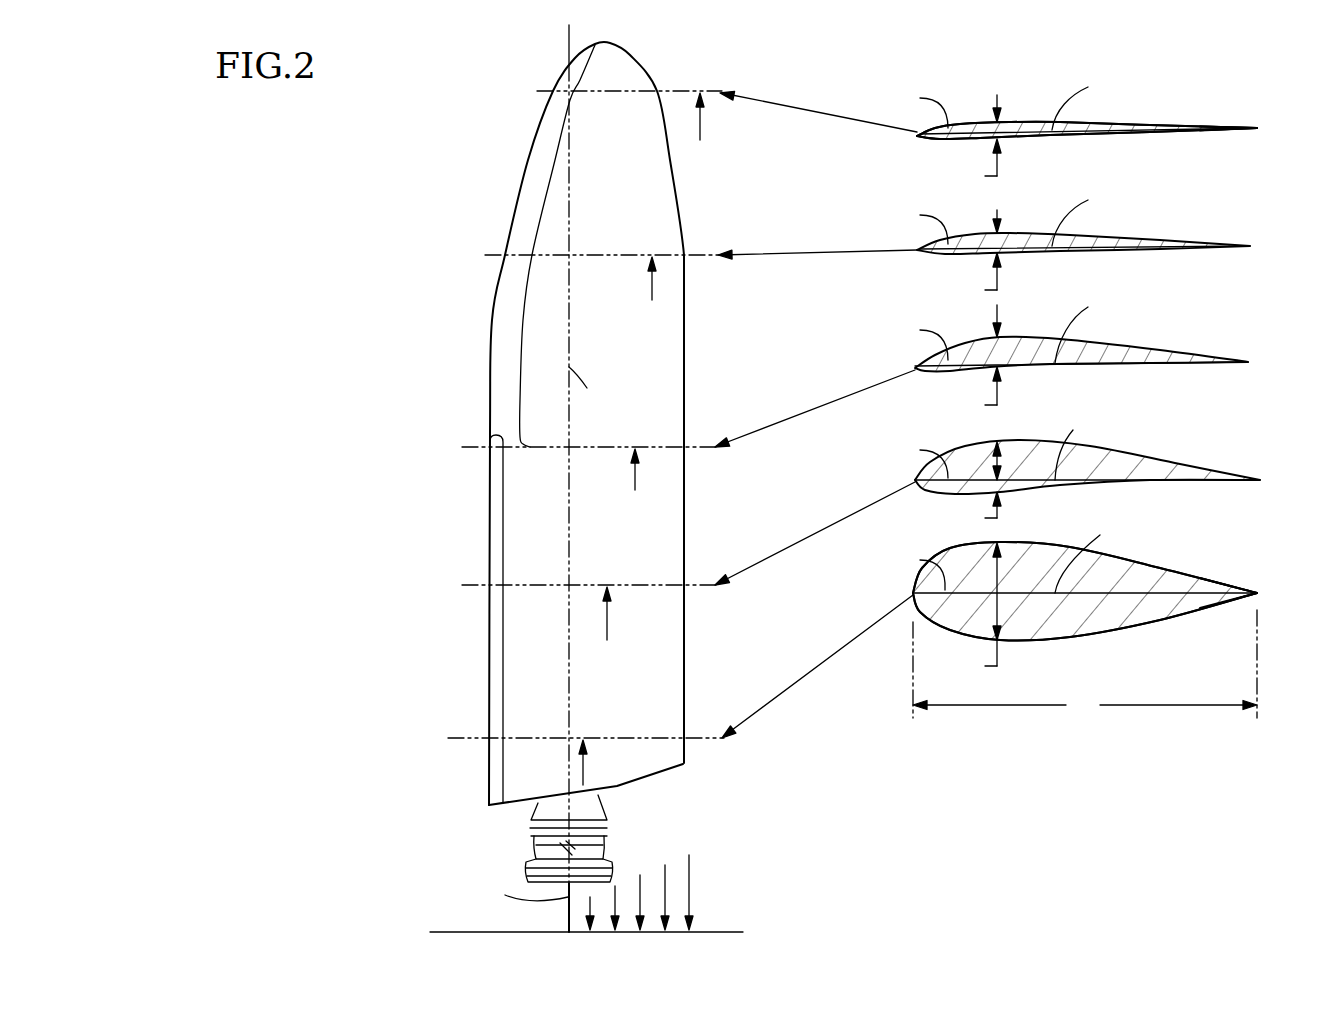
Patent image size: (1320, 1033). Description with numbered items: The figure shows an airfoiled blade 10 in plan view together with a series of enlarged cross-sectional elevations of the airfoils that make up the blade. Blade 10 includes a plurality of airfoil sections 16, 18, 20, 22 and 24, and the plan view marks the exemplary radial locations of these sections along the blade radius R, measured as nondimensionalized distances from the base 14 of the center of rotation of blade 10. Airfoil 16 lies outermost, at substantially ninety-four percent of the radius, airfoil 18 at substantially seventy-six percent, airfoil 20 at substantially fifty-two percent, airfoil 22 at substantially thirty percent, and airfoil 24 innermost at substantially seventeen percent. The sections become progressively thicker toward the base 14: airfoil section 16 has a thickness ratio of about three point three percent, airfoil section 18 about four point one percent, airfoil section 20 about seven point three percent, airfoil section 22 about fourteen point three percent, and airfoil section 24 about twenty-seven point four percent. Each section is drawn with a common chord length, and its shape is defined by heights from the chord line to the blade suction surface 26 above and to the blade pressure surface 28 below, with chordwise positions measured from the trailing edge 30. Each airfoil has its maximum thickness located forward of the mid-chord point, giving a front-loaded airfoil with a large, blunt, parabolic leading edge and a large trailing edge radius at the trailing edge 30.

The airfoiled blade 10 is at (470, 152).
The base 14 is at (710, 932).
The airfoil section 16 is at (1178, 126).
The airfoil section 18 is at (1178, 241).
The airfoil section 20 is at (1185, 345).
The airfoil section 22 is at (1190, 466).
The airfoil section 24 is at (1198, 568).
The blade suction surface 26 is at (1097, 125).
The blade pressure surface 28 is at (1097, 133).
The trailing edge 30 is at (1252, 131).